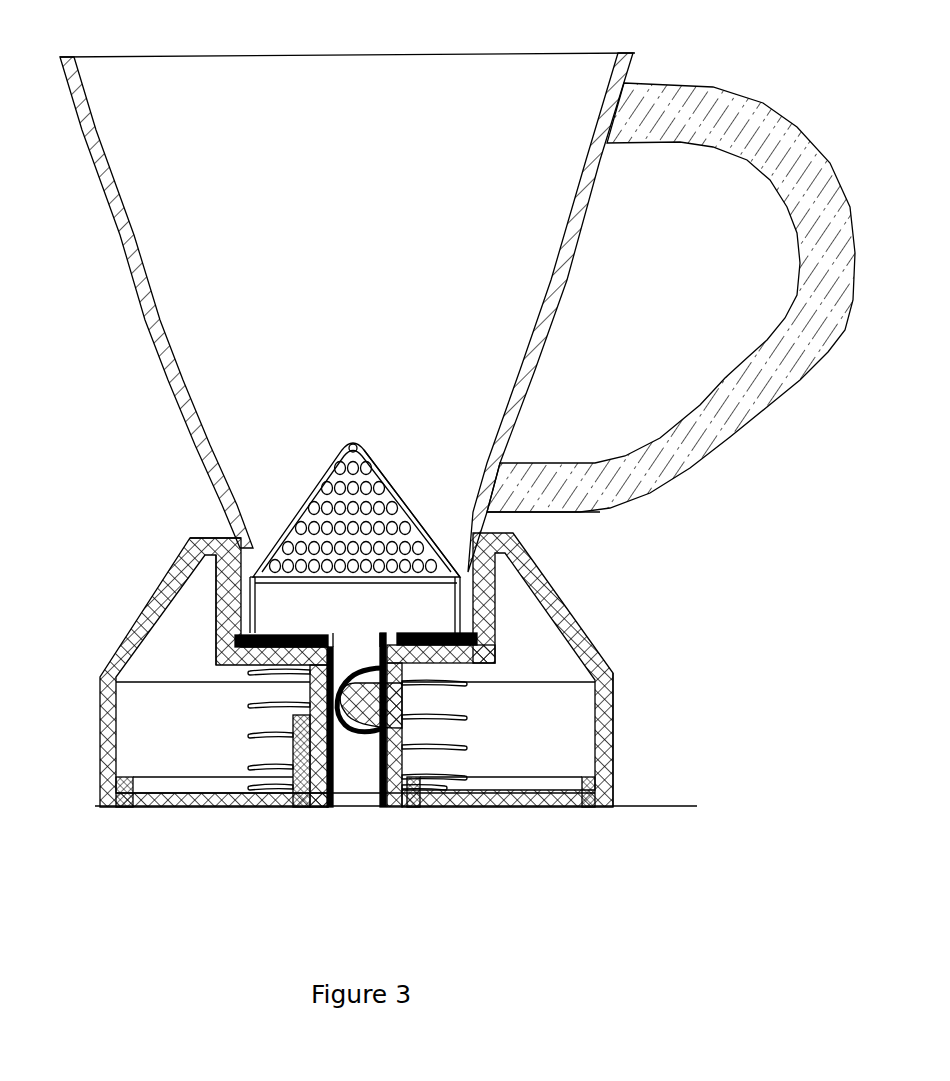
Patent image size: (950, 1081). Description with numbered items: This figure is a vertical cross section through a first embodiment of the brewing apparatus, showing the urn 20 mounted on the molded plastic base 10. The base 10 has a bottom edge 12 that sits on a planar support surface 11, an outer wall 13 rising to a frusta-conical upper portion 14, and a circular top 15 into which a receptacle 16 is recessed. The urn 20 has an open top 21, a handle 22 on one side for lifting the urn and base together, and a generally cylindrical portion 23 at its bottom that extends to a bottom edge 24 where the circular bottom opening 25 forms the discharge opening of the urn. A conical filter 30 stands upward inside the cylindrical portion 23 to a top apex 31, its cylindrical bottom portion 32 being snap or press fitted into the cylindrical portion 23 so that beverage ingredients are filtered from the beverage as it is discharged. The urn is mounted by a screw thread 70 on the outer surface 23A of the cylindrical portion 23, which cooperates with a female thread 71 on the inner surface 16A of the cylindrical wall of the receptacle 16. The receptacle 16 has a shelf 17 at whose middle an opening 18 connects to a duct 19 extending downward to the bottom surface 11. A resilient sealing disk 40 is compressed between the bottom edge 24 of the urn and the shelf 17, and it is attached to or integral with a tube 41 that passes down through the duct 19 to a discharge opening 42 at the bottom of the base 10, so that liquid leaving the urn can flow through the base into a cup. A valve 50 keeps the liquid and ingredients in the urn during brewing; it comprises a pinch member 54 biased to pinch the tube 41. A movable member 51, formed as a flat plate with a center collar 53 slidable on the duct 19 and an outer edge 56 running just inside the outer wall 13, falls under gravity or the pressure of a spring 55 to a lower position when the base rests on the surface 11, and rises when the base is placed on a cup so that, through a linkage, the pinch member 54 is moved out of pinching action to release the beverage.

The base 10 is at (614, 716).
The planar support surface 11 is at (692, 807).
The bottom edge 12 is at (603, 808).
The outer wall 13 is at (614, 755).
The frusta-conical upper portion 14 is at (590, 620).
The circular top 15 is at (203, 537).
The receptacle 16 is at (497, 588).
The inner surface 16A is at (489, 508).
The shelf 17 is at (247, 668).
The opening 18 is at (356, 650).
The duct 19 is at (400, 757).
The urn 20 is at (128, 328).
The open top 21 is at (69, 57).
The handle 22 is at (703, 398).
The cylindrical portion 23 is at (350, 518).
The outer surface 23A is at (243, 553).
The bottom edge 24 is at (253, 628).
The bottom opening 25 is at (361, 614).
The filter 30 is at (369, 482).
The top apex 31 is at (352, 438).
The cylindrical bottom portion 32 is at (453, 470).
The resilient sealing disk 40 is at (467, 652).
The tube 41 is at (337, 772).
The discharge opening 42 is at (384, 772).
The valve 50 is at (405, 702).
The movable member 51 is at (164, 808).
The center collar 53 is at (300, 777).
The pinch member 54 is at (362, 742).
The spring 55 is at (247, 764).
The outer edge 56 is at (128, 810).
The screw thread 70 is at (214, 618).
The female thread 71 is at (218, 572).